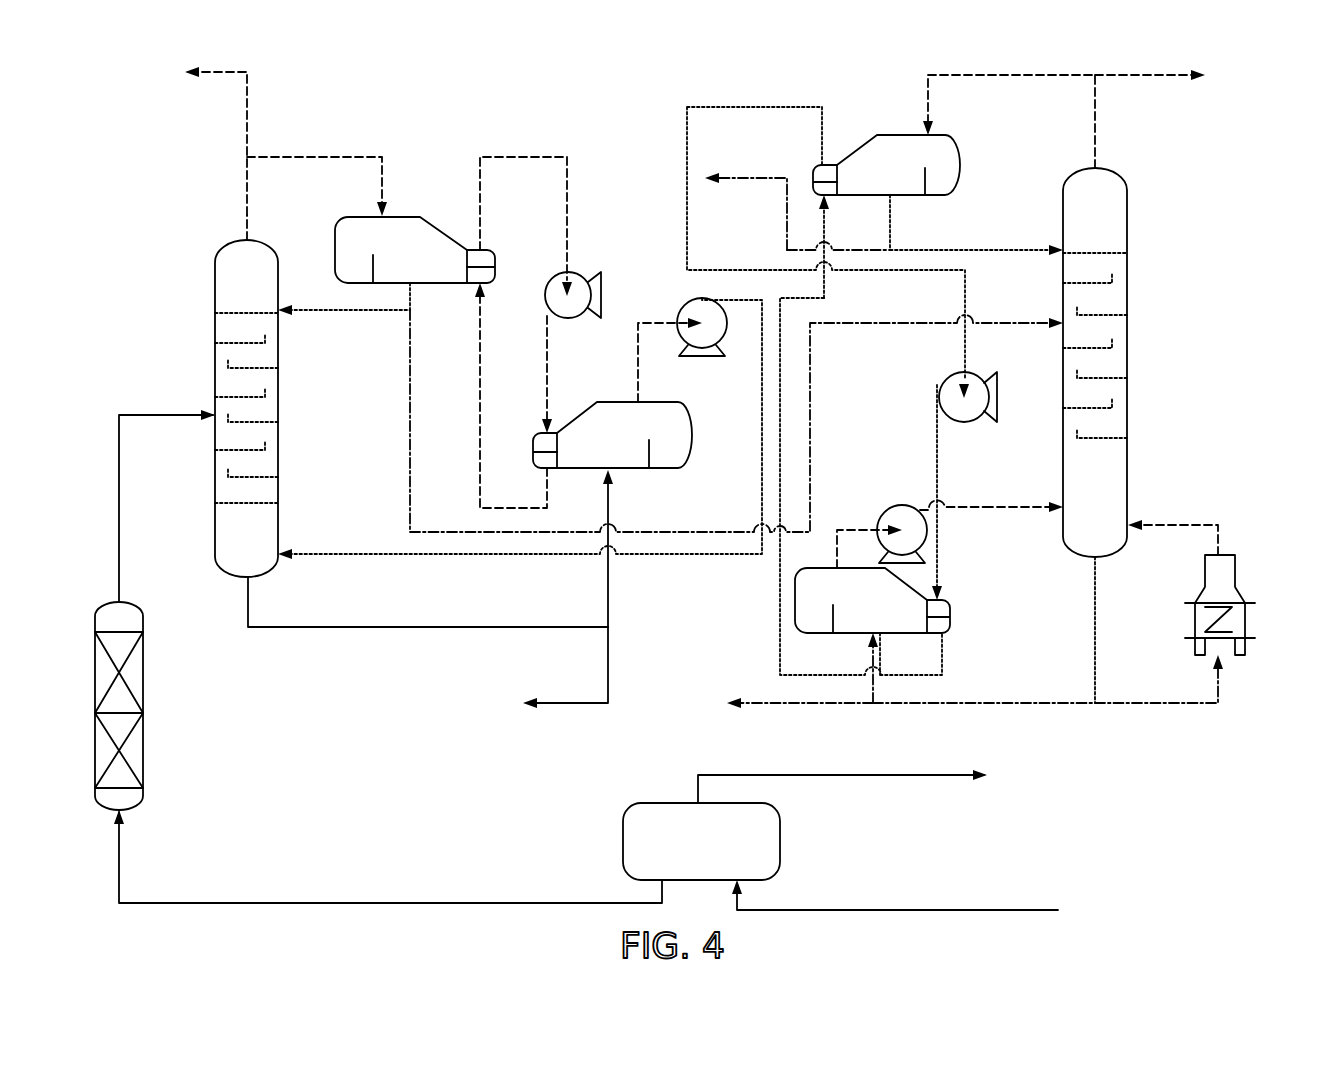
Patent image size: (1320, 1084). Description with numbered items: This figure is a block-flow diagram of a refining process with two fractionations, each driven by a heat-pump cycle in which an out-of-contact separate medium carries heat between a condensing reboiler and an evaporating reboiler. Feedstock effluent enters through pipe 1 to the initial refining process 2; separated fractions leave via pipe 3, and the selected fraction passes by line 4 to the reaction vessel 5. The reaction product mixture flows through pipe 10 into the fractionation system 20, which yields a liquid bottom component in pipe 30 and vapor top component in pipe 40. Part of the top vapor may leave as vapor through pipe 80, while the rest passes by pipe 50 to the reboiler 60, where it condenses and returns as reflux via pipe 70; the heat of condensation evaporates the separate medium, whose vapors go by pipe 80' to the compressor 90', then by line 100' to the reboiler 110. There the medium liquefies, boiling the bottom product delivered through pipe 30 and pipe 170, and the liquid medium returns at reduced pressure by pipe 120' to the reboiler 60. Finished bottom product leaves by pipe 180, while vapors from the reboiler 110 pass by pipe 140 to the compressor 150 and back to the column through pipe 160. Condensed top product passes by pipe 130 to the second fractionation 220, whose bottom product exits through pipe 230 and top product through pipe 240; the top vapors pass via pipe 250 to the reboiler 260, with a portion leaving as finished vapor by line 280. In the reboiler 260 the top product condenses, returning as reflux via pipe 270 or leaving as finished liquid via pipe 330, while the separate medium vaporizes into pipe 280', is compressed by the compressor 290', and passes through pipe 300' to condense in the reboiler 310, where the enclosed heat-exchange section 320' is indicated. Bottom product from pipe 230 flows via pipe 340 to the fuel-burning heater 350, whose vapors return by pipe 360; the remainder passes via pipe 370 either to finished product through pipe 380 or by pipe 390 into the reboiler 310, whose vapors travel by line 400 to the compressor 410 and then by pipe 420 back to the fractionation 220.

The pipe 1 is at (805, 908).
The initial refining process 2 is at (620, 820).
The pipe 3 is at (696, 787).
The line 4 is at (548, 900).
The reaction vessel 5 is at (145, 690).
The pipe 10 is at (180, 432).
The fractionation system 20 is at (280, 460).
The pipe 30 is at (246, 614).
The pipe 40 is at (240, 232).
The pipe 50 is at (370, 152).
The reboiler 60 is at (392, 216).
The pipe 70 is at (412, 300).
The pipe 80 is at (226, 140).
The pipe 80' is at (526, 194).
The compressor 90' is at (579, 263).
The line 100' is at (588, 374).
The reboiler 110 is at (688, 402).
The pipe 120' is at (516, 395).
The pipe 130 is at (452, 530).
The pipe 140 is at (656, 322).
The compressor 150 is at (690, 300).
The pipe 160 is at (760, 446).
The pipe 170 is at (612, 584).
The pipe 180 is at (573, 706).
The fractionation 220 is at (1128, 332).
The pipe 230 is at (1100, 602).
The pipe 240 is at (1102, 138).
The pipe 250 is at (1064, 85).
The reboiler 260 is at (862, 147).
The pipe 270 is at (893, 243).
The line 280 is at (1199, 89).
The pipe 280' is at (816, 220).
The compressor 290' is at (1000, 480).
The pipe 300' is at (968, 486).
The reboiler 310 is at (955, 608).
The heat exchange section 320' is at (899, 438).
The pipe 330 is at (776, 175).
The pipe 340 is at (1146, 700).
The heater 350 is at (1245, 596).
The pipe 360 is at (1193, 520).
The pipe 370 is at (963, 706).
The pipe 380 is at (808, 706).
The pipe 390 is at (870, 662).
The line 400 is at (852, 525).
The compressor 410 is at (900, 505).
The pipe 420 is at (1011, 512).